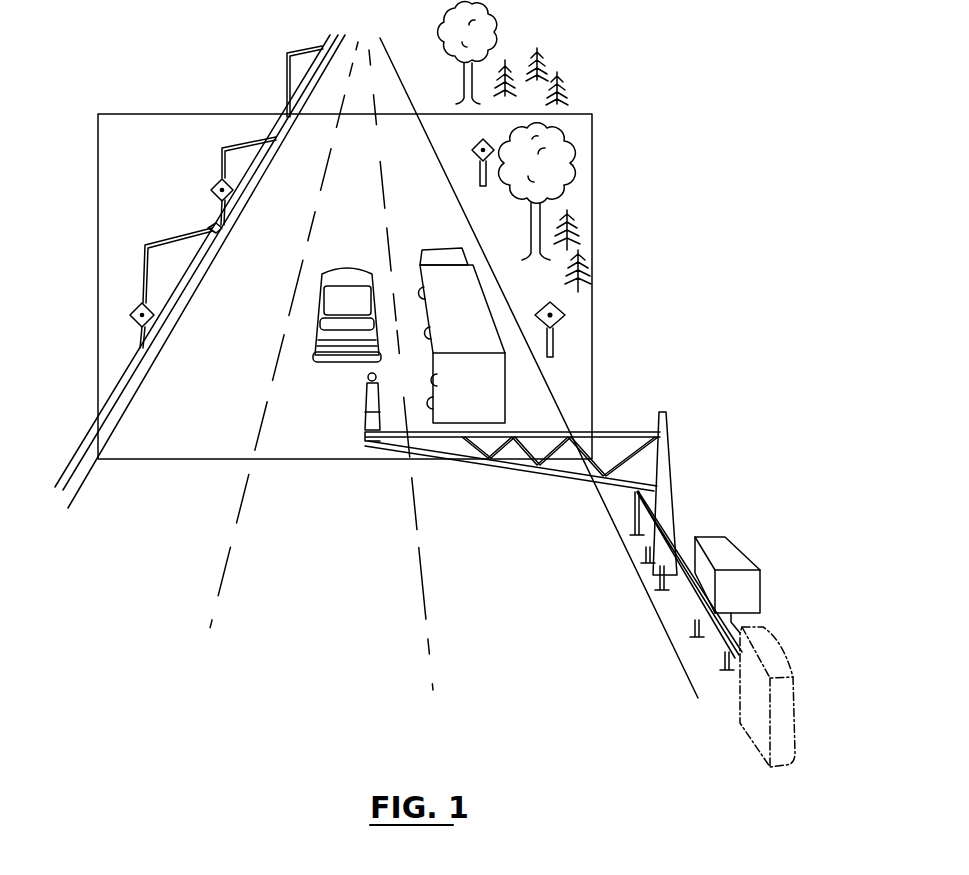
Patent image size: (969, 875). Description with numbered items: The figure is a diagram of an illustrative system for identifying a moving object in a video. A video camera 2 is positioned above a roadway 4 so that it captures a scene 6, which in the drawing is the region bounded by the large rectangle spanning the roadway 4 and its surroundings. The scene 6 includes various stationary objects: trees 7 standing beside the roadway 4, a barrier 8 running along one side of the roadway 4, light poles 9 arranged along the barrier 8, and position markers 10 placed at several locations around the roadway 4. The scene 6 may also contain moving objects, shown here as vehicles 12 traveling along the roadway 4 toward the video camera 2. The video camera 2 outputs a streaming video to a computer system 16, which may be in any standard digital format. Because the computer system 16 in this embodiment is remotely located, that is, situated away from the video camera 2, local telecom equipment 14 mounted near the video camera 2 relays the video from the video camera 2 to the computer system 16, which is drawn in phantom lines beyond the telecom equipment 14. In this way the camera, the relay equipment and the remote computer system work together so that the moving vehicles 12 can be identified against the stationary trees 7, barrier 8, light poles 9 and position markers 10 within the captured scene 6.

The video camera 2 is at (363, 397).
The roadway 4 is at (337, 549).
The scene 6 is at (203, 112).
The trees 7 is at (568, 205).
The barrier 8 is at (81, 441).
The light poles 9 is at (221, 165).
The position markers 10 is at (233, 197).
The vehicles 12 is at (418, 263).
The local telecom equipment 14 is at (712, 536).
The computer system 16 is at (743, 731).